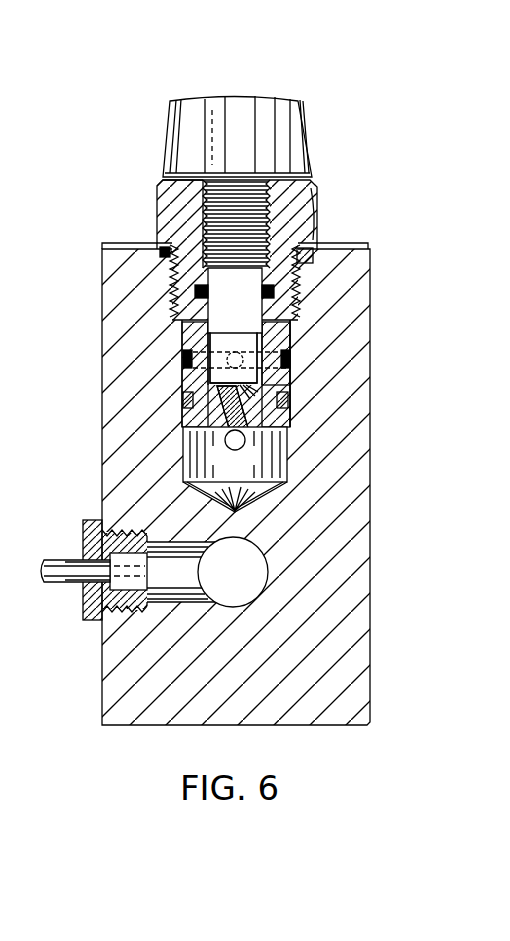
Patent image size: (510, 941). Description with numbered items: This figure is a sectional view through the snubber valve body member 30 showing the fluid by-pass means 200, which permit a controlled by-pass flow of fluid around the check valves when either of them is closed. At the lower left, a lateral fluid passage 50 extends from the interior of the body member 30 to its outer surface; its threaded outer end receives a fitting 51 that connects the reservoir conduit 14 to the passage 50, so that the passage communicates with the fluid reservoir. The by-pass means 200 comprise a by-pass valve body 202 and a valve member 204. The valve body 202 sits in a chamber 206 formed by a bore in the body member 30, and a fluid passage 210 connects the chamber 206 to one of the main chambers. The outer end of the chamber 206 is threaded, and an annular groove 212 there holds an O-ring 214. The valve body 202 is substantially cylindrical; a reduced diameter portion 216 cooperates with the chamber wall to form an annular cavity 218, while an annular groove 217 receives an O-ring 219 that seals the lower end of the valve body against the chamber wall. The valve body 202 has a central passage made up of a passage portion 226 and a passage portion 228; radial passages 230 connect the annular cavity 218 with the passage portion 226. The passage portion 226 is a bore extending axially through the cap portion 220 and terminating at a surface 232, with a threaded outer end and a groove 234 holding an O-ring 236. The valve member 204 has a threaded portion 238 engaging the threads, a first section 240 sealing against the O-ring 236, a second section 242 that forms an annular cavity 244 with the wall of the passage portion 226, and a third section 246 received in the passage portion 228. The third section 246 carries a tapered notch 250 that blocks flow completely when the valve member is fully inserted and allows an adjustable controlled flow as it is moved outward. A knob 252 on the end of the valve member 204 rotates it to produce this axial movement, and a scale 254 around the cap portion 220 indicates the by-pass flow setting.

The reservoir conduit 14 is at (55, 560).
The body member 30 is at (370, 670).
The lateral fluid passage 50 is at (150, 608).
The fitting 51 is at (83, 595).
The fluid by-pass means 200 is at (90, 124).
The by-pass valve body 202 is at (163, 190).
The valve member 204 is at (215, 218).
The chamber 206 is at (287, 443).
The fluid passage 210 is at (245, 446).
The annular groove 212 is at (315, 244).
The O-ring 214 is at (311, 221).
The reduced diameter portion 216 is at (197, 360).
The annular groove 217 is at (259, 375).
The annular cavity 218 is at (287, 357).
The O-ring 219 is at (285, 402).
The cap portion 220 is at (317, 196).
The passage portion 226 is at (262, 325).
The passage portion 228 is at (222, 418).
The radial passages 230 is at (237, 352).
The surface 232 is at (183, 397).
The groove 234 is at (290, 312).
The O-ring 236 is at (274, 292).
The threaded portion 238 is at (205, 233).
The first section 240 is at (220, 318).
The second section 242 is at (222, 345).
The annular cavity 244 is at (277, 367).
The third section 246 is at (280, 413).
The notch 250 is at (226, 436).
The knob 252 is at (245, 113).
The scale 254 is at (357, 248).